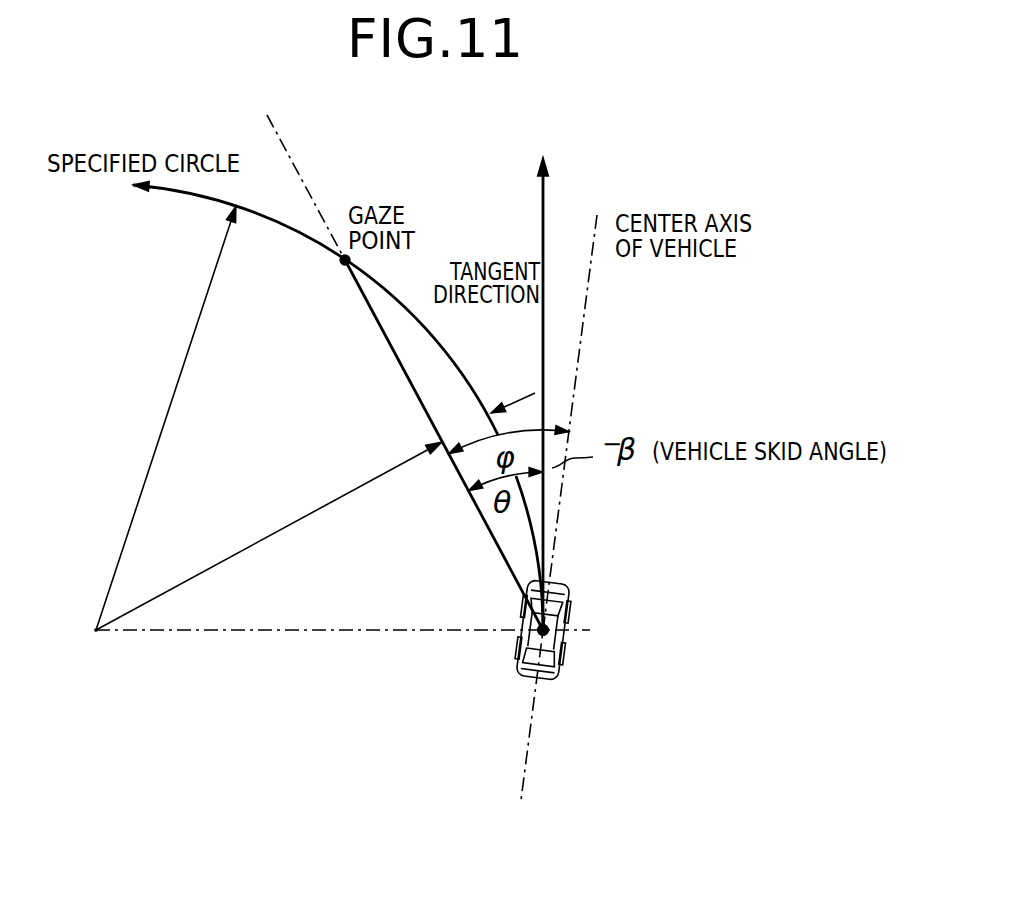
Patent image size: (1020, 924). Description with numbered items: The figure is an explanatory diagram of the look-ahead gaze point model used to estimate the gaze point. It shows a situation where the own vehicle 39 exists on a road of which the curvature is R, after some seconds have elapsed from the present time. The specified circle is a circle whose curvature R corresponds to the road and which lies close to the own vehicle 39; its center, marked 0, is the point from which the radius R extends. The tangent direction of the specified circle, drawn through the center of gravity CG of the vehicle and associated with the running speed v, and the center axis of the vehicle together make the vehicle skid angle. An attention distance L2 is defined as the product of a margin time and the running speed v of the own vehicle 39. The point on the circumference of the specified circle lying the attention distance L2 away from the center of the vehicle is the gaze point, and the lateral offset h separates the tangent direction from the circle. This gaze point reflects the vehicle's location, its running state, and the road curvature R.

The own vehicle 39 is at (560, 658).
The curvature R is at (166, 418).
The center of specified circle 0 is at (80, 629).
The attention distance L2 is at (395, 372).
The running speed v is at (532, 393).
The lateral deviation h is at (493, 416).
The center of gravity of vehicle CG is at (591, 638).